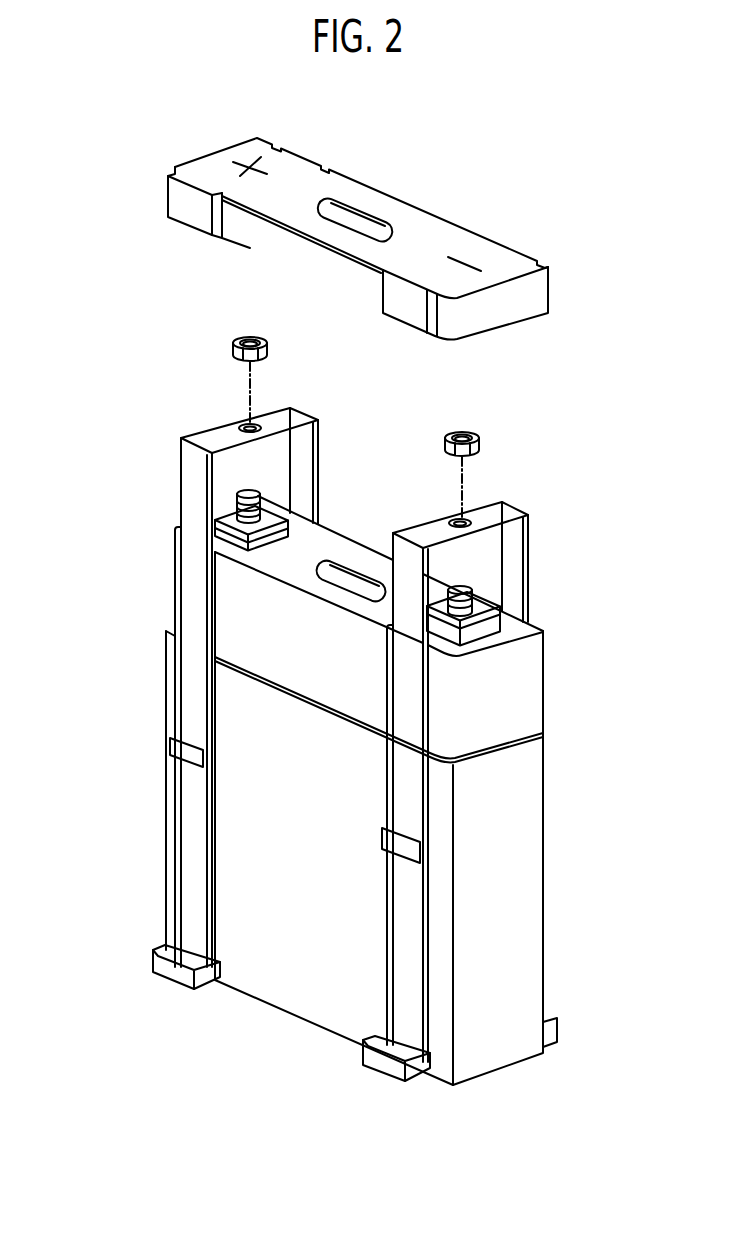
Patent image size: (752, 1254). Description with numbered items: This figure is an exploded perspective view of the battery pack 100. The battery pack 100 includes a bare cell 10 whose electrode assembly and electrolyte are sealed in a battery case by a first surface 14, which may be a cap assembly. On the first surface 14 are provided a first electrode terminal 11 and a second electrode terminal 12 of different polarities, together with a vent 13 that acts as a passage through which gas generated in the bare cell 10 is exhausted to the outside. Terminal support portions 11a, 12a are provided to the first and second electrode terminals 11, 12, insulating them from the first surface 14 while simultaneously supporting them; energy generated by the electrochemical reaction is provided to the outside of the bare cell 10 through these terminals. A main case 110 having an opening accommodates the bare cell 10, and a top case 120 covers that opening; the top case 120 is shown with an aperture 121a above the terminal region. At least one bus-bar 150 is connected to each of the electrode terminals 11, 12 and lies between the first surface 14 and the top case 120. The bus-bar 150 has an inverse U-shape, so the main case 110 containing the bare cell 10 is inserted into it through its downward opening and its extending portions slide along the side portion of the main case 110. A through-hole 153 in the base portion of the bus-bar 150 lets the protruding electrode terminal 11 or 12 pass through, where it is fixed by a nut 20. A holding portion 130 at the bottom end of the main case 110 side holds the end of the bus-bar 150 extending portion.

The battery pack 100 is at (100, 163).
The main case 110 is at (550, 828).
The top case 120 is at (472, 220).
The vent opening of top cover 121a is at (360, 216).
The bare cell 10 is at (333, 523).
The first electrode terminal 11 is at (245, 495).
The terminal support portion 11a is at (220, 521).
The second electrode terminal 12 is at (465, 592).
The terminal support portion 12a is at (433, 600).
The vent 13 is at (352, 585).
The first surface 14 is at (527, 632).
The nut 20 is at (232, 346).
The bus-bar 150 is at (523, 500).
The through-hole 153 is at (240, 427).
The holding portion 130 is at (172, 972).